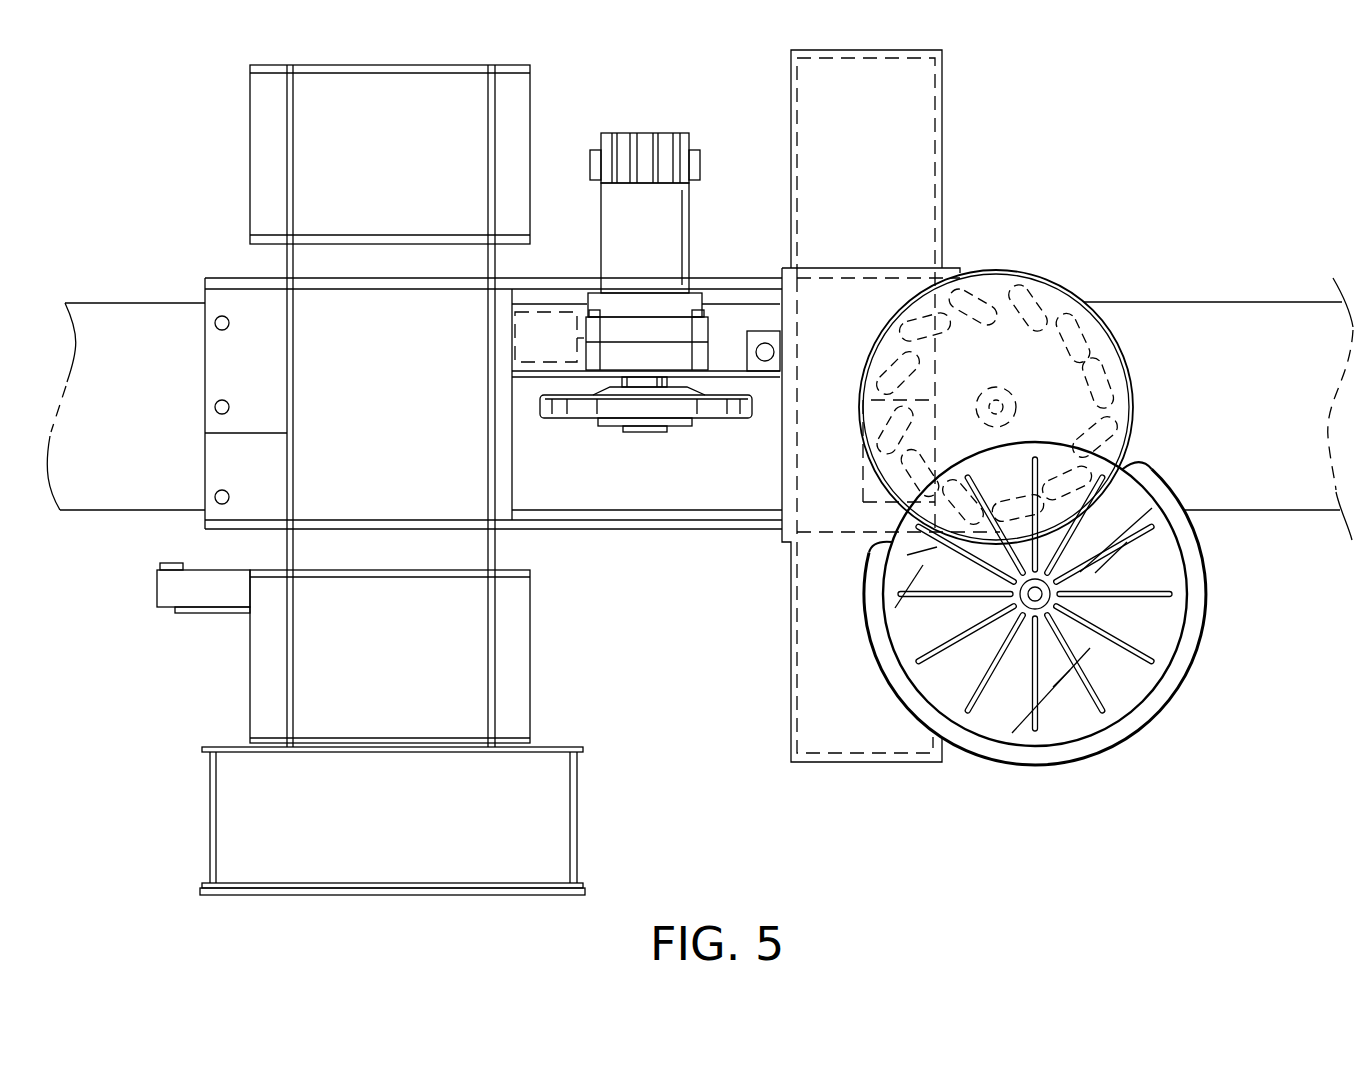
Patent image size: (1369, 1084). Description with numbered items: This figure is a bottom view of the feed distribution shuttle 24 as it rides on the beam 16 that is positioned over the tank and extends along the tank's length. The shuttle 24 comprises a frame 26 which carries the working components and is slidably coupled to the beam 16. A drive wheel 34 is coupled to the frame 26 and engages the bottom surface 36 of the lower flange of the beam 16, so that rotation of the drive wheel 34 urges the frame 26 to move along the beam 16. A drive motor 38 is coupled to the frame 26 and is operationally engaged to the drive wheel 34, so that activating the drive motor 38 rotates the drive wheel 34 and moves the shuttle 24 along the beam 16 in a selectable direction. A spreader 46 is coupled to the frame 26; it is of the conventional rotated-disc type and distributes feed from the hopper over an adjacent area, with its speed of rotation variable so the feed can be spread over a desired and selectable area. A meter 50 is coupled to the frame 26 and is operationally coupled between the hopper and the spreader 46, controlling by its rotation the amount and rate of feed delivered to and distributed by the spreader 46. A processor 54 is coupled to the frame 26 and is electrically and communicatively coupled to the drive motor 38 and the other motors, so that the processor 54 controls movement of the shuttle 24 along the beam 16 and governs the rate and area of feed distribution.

The beam 16 is at (1238, 308).
The shuttle 24 is at (1017, 124).
The frame 26 is at (207, 283).
The drive wheel 34 is at (593, 407).
The bottom surface 36 is at (760, 488).
The drive motor 38 is at (686, 228).
The spreader 46 is at (1173, 638).
The meter 50 is at (1040, 285).
The processor 54 is at (548, 312).